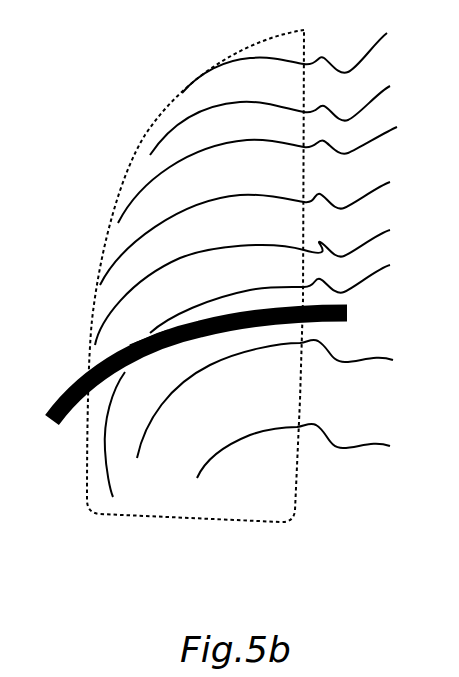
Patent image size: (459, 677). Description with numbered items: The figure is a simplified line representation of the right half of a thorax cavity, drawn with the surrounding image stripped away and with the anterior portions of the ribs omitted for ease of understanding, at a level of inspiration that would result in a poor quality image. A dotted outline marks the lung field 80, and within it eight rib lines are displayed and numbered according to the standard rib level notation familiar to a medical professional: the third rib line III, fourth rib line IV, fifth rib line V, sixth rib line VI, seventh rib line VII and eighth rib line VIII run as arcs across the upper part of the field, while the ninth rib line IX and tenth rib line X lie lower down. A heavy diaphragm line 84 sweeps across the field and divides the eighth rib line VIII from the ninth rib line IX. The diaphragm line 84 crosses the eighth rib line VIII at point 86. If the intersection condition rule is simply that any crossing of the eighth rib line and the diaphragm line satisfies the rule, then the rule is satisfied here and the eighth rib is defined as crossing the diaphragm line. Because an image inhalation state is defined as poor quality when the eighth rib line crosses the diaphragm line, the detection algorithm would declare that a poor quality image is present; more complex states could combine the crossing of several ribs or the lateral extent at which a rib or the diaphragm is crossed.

The lung field 80 is at (165, 495).
The diaphragm line 84 is at (58, 428).
The point 86 is at (147, 340).
The third rib line III is at (298, 51).
The fourth rib line IV is at (287, 108).
The fifth rib line V is at (270, 173).
The sixth rib line VI is at (262, 230).
The seventh rib line VII is at (263, 360).
The eighth rib line VIII is at (294, 297).
The ninth rib line IX is at (284, 399).
The tenth rib line X is at (304, 451).